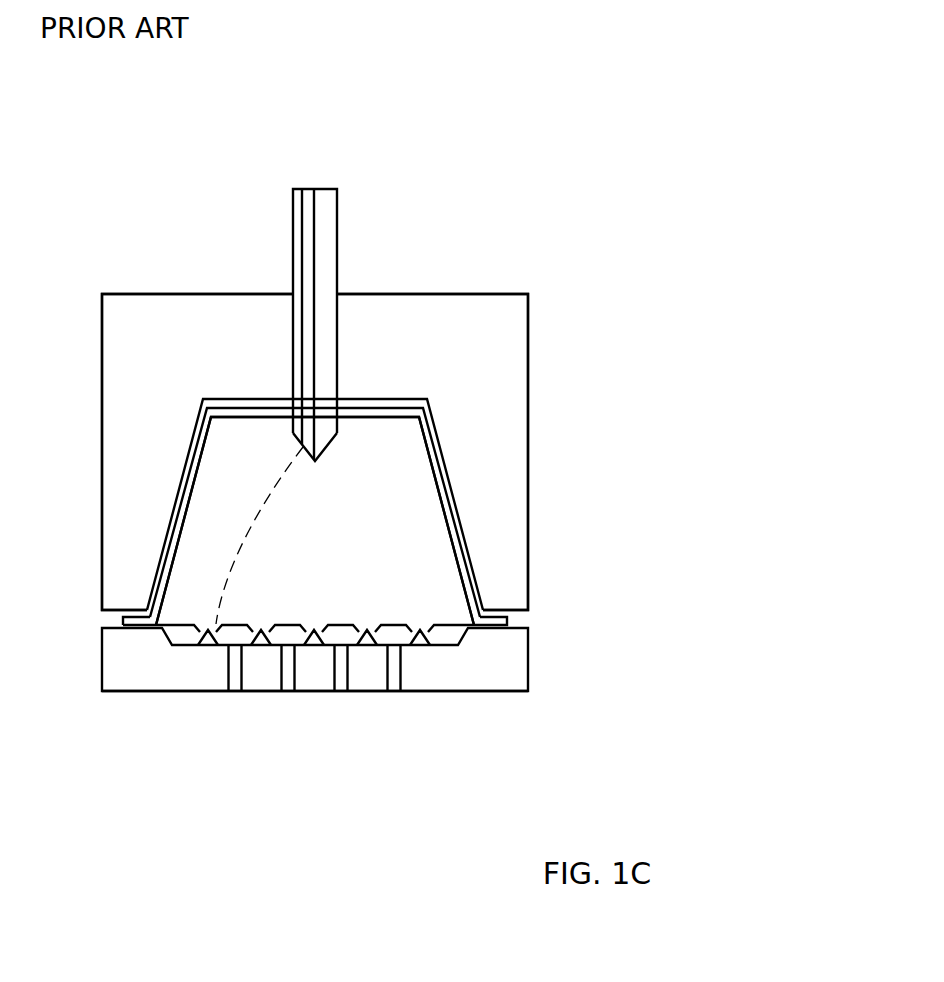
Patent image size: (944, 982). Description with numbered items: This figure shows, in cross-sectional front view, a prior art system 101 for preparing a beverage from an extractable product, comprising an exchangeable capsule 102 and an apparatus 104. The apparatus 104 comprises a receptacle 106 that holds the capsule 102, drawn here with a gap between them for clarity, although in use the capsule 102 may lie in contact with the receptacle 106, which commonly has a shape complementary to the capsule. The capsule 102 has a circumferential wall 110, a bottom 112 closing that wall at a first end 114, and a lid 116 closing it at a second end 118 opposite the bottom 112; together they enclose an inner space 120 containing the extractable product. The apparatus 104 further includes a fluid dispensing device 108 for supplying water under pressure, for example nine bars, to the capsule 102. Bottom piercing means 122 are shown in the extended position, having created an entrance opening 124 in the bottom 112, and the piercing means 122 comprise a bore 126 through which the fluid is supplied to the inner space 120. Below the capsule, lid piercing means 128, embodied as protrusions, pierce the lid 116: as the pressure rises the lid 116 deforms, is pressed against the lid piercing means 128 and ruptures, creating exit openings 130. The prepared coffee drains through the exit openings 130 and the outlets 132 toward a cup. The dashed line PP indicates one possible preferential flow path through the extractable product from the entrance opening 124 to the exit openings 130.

The system 101 is at (587, 681).
The exchangeable capsule 102 is at (456, 523).
The apparatus 104 is at (592, 270).
The receptacle 106 is at (528, 429).
The fluid dispensing device 108 is at (337, 203).
The circumferential wall 110 is at (462, 565).
The bottom 112 is at (390, 412).
The first end 114 is at (431, 412).
The lid 116 is at (441, 627).
The second end 118 is at (473, 613).
The inner space 120 is at (222, 470).
The bottom piercing means 122 is at (338, 245).
The entrance opening 124 is at (345, 427).
The bore 126 is at (308, 197).
The lid piercing means 128 is at (210, 641).
The exit openings 130 is at (208, 617).
The outlets 132 is at (235, 683).
The preferential flow path PP is at (264, 535).